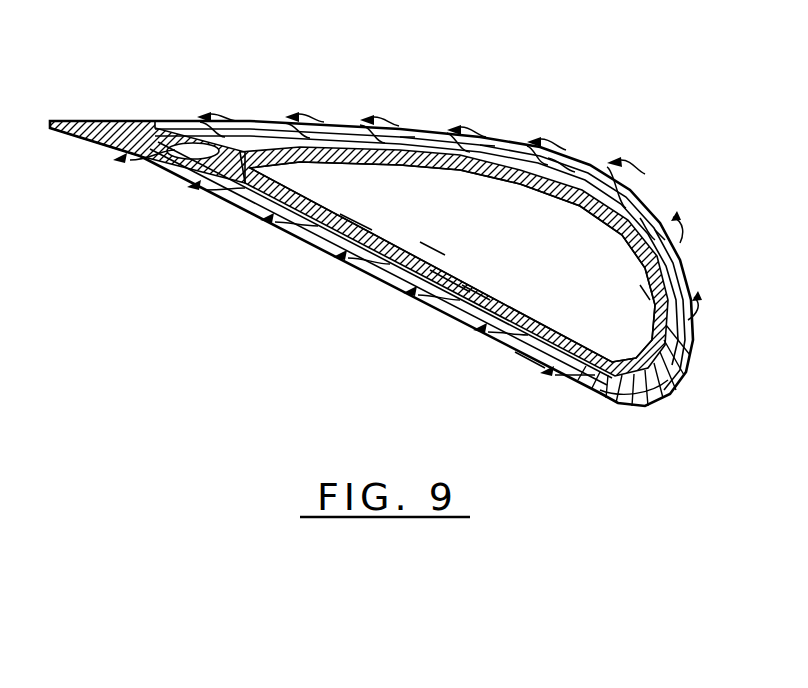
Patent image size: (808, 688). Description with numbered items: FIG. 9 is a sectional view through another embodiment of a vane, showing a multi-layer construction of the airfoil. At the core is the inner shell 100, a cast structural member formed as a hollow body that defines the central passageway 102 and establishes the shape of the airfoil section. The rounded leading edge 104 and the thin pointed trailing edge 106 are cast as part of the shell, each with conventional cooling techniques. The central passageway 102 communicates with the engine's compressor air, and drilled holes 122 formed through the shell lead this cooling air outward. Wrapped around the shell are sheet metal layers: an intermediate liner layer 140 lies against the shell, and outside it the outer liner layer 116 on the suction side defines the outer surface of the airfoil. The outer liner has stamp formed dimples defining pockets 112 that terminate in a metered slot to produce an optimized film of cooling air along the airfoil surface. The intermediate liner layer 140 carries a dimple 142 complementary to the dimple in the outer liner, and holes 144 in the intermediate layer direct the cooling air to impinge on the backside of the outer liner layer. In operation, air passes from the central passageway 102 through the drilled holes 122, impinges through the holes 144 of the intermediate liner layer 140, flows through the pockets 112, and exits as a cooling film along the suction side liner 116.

The inner shell 100 is at (537, 320).
The central passageway 102 is at (615, 306).
The leading edge 104 is at (686, 360).
The trailing edge 106 is at (79, 121).
The pockets 112 is at (563, 167).
The suction side outer liner layer 116 is at (491, 150).
The drilled holes 122 is at (462, 205).
The intermediate liner layer 140 is at (447, 280).
The dimple 142 is at (487, 160).
The holes 144 is at (477, 293).